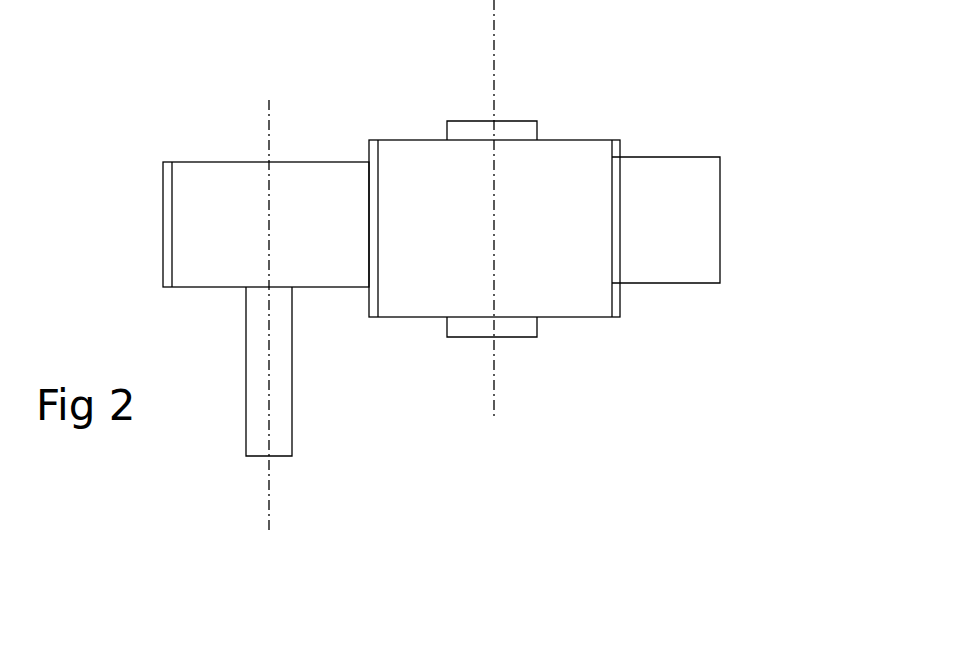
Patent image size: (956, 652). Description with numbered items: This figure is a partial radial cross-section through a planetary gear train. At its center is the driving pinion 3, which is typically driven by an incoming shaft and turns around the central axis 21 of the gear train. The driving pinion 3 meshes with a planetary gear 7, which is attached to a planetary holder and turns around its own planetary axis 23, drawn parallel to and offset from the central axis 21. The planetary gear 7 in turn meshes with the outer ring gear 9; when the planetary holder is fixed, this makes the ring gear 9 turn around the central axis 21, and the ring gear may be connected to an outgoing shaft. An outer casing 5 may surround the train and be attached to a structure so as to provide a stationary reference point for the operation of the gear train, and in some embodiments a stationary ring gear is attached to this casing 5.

The driving pinion 3 is at (215, 252).
The outer casing 5 is at (269, 382).
The planetary gear 7 is at (580, 178).
The outer ring gear 9 is at (686, 263).
The central axis 21 is at (270, 188).
The planetary axis 23 is at (494, 98).